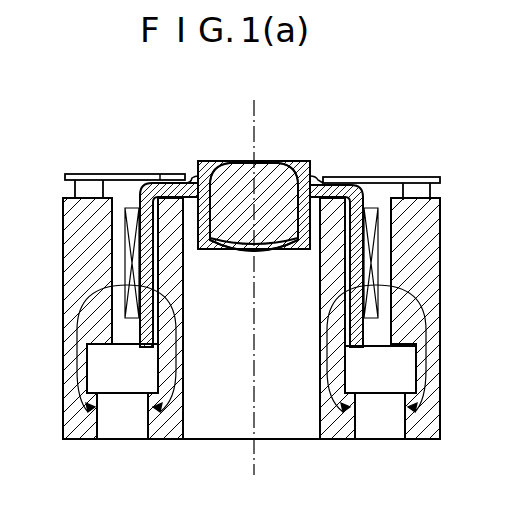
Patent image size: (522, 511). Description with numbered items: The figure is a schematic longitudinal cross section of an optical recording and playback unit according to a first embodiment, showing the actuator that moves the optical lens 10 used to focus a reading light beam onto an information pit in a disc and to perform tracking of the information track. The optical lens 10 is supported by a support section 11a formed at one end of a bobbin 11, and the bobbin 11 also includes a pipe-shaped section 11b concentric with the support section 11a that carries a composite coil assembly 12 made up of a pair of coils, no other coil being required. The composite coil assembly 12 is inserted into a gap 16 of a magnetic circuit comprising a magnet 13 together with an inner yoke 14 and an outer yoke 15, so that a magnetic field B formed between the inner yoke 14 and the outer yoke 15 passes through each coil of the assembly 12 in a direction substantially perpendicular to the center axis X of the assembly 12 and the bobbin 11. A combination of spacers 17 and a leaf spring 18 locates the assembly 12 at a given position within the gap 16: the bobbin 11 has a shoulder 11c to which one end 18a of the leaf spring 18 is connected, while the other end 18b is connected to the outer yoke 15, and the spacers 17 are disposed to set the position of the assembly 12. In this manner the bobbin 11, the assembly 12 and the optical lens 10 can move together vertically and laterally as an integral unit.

The optical lens 10 is at (237, 172).
The bobbin 11 is at (251, 240).
The support section 11a is at (298, 168).
The pipe-shaped section 11b is at (143, 283).
The shoulder 11c is at (192, 178).
The composite coil assembly 12 is at (373, 337).
The magnet 13 is at (127, 428).
The inner yoke 14 is at (177, 312).
The outer yoke 15 is at (63, 299).
The gap 16 is at (118, 240).
The spacers 17 is at (430, 189).
The leaf spring 18 is at (246, 166).
The one end of leaf spring 18a is at (168, 174).
The other end of leaf spring 18b is at (87, 174).
The magnetic field B is at (327, 344).
The center axis X is at (264, 287).